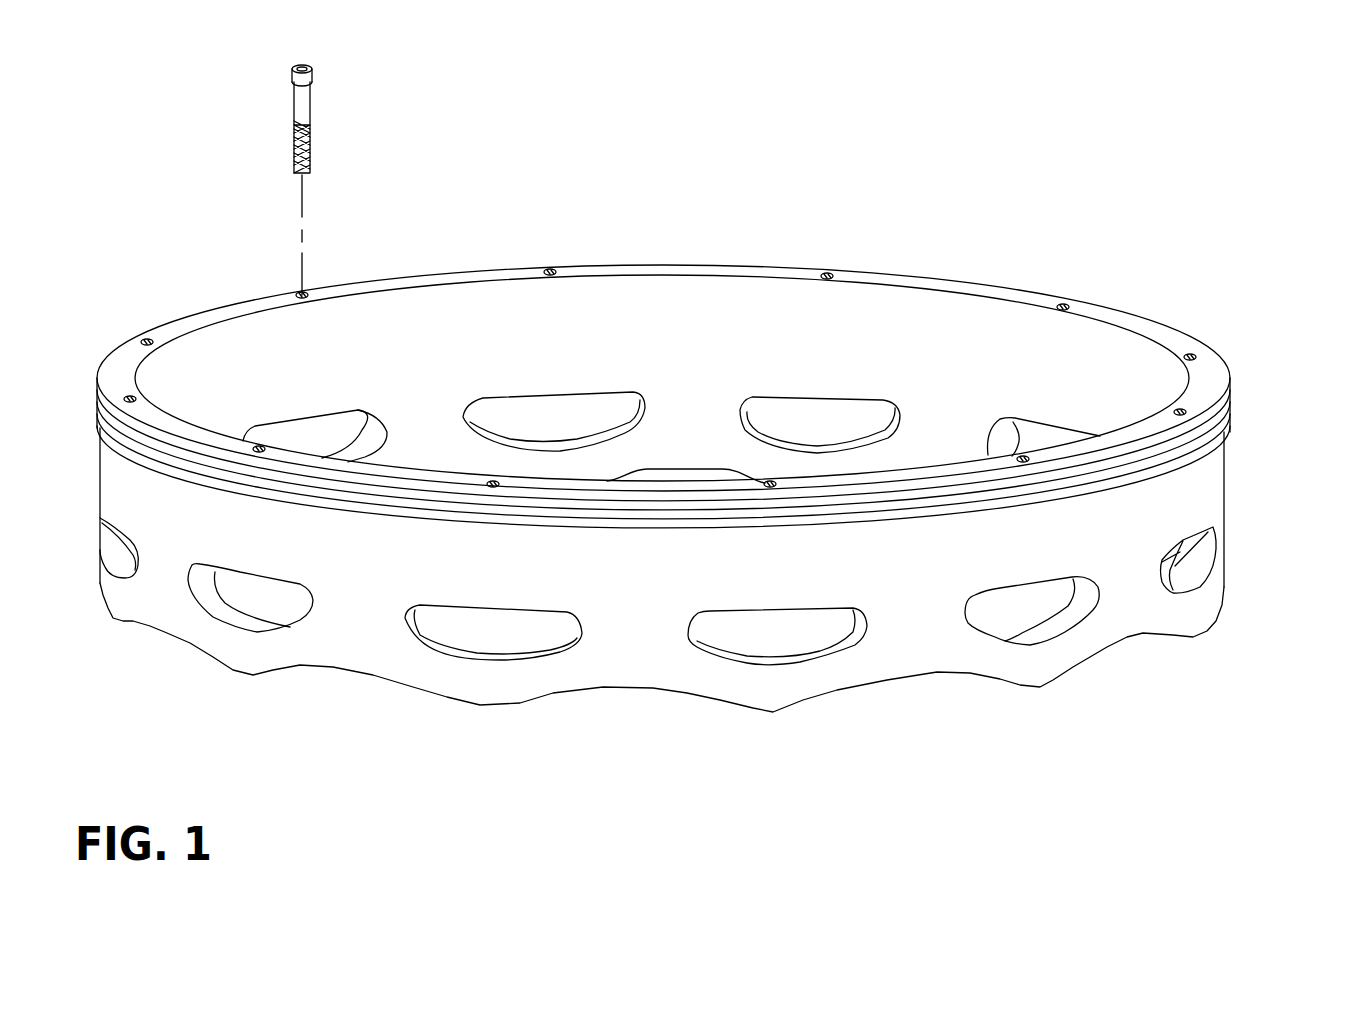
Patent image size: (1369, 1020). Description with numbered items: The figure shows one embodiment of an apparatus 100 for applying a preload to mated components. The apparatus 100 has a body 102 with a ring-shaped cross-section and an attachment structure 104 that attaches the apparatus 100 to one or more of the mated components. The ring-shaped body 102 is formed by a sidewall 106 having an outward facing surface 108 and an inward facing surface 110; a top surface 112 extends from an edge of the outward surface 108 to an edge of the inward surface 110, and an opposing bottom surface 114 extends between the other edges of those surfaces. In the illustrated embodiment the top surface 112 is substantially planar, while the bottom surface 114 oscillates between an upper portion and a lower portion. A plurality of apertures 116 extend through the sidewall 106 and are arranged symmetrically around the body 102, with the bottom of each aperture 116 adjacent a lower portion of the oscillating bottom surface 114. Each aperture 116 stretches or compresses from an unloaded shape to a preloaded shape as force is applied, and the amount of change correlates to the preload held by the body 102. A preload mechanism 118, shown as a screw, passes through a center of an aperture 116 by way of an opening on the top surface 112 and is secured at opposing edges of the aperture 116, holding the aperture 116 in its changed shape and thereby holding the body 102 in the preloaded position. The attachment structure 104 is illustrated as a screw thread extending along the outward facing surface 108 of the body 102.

The apparatus 100 is at (1180, 135).
The body 102 is at (949, 757).
The attachment structure 104 is at (1245, 400).
The sidewall 106 is at (1248, 515).
The outward facing surface 108 is at (1226, 475).
The inward facing surface 110 is at (1016, 383).
The top surface 112 is at (1173, 340).
The bottom surface 114 is at (1136, 658).
The apertures 116 is at (815, 417).
The preload mechanism 118 is at (330, 103).